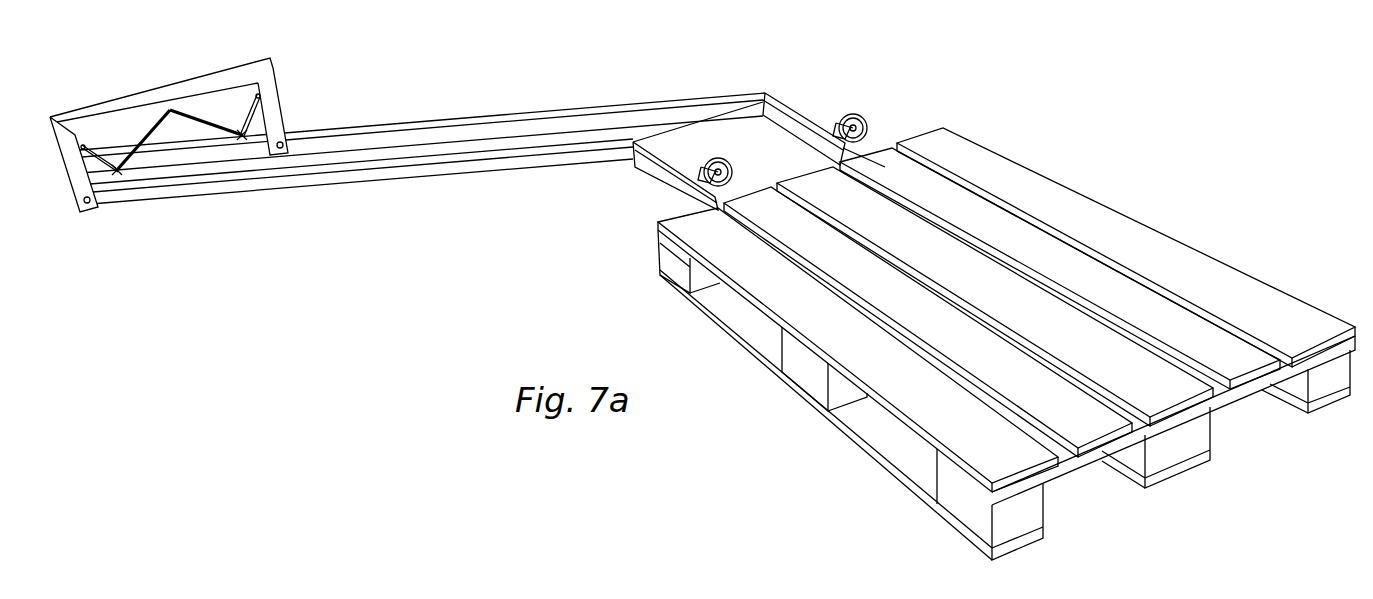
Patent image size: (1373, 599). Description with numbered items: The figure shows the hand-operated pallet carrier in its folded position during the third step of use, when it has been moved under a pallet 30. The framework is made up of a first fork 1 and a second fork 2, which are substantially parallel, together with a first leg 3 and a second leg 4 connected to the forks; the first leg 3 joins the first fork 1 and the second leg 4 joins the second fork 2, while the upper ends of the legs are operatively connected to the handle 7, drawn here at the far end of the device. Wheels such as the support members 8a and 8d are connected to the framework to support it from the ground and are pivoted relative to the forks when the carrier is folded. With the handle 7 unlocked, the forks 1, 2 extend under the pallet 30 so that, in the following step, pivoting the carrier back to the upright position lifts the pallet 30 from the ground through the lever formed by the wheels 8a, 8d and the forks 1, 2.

The first fork 1 is at (800, 110).
The second fork 2 is at (667, 180).
The first leg 3 is at (502, 113).
The second leg 4 is at (404, 182).
The handle 7 is at (157, 67).
The support member (wheel) 8a is at (866, 118).
The support member (wheel) 8d is at (735, 164).
The pallet 30 is at (1098, 205).